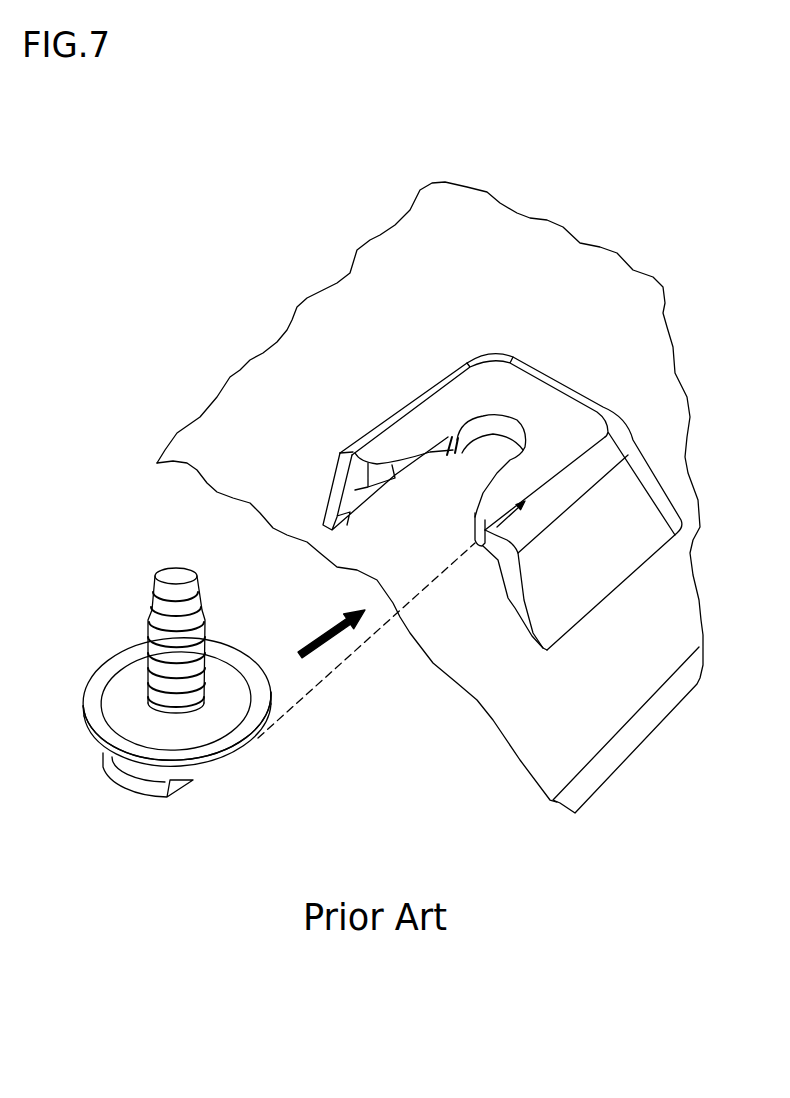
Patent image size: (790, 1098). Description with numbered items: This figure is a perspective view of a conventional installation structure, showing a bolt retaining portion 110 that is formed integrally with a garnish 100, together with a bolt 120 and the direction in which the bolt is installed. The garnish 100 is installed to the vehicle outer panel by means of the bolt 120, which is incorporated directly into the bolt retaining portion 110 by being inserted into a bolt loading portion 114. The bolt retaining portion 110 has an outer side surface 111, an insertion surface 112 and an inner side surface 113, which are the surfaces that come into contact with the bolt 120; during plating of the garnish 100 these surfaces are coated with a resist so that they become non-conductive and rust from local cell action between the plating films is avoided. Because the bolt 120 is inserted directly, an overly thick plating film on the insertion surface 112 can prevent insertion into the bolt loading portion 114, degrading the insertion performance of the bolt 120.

The garnish 100 is at (637, 750).
The bolt retaining portion 110 is at (502, 468).
The outer side surface 111 is at (523, 482).
The insertion surface 112 is at (416, 458).
The inner side surface 113 is at (355, 492).
The bolt loading portion 114 is at (505, 426).
The bolt 120 is at (93, 670).